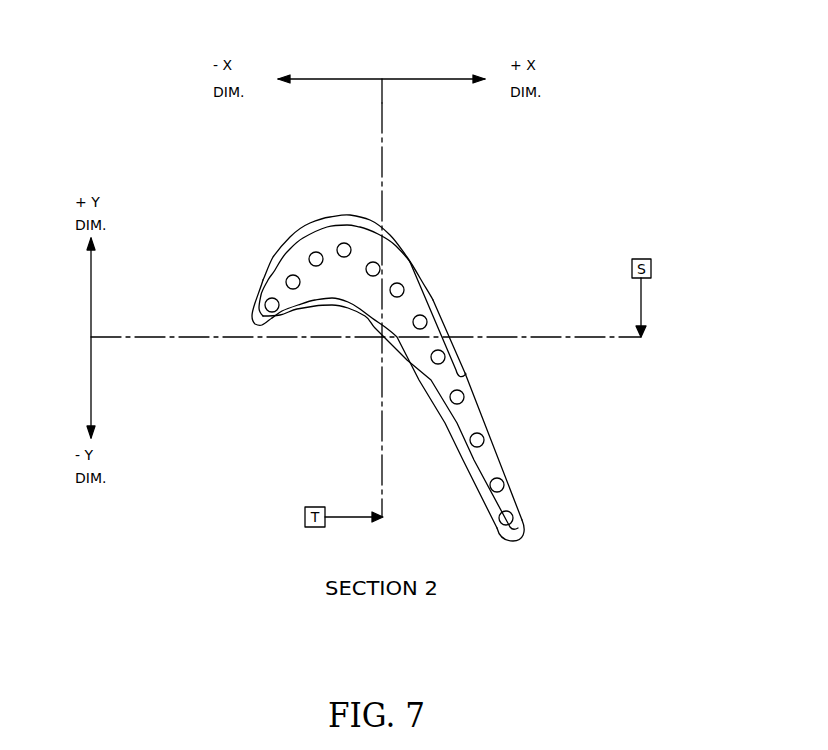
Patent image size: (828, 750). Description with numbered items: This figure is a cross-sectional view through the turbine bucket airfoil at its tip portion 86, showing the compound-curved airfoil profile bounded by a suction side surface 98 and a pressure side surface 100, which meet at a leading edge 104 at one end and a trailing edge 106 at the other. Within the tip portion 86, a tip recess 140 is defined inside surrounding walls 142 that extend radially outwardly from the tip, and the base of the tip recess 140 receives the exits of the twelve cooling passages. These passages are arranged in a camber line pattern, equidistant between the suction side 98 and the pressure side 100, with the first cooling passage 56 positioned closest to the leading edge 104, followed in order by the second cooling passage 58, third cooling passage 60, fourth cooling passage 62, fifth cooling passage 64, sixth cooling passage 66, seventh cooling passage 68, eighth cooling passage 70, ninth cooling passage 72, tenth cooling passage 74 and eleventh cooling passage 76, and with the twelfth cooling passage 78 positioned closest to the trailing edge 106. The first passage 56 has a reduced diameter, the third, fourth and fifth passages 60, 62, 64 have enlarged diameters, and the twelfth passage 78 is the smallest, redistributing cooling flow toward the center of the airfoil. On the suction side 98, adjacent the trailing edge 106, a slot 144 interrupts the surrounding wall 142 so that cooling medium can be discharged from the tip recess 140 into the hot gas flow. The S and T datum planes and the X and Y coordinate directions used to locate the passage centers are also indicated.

The first cooling passage 56 is at (268, 301).
The second cooling passage 58 is at (289, 277).
The third cooling passage 60 is at (312, 254).
The fourth cooling passage 62 is at (341, 243).
The fifth cooling passage 64 is at (378, 264).
The sixth cooling passage 66 is at (402, 285).
The seventh cooling passage 68 is at (425, 317).
The eighth cooling passage 70 is at (443, 352).
The ninth cooling passage 72 is at (462, 392).
The tenth cooling passage 74 is at (482, 435).
The eleventh cooling passage 76 is at (502, 480).
The twelfth cooling passage 78 is at (511, 514).
The tip portion 86 is at (440, 330).
The suction side surface 98 is at (416, 254).
The pressure side surface 100 is at (353, 313).
The leading edge 104 is at (232, 327).
The trailing edge 106 is at (596, 524).
The tip recess 140 is at (315, 284).
The surrounding walls 142 is at (348, 216).
The slot 144 is at (499, 455).